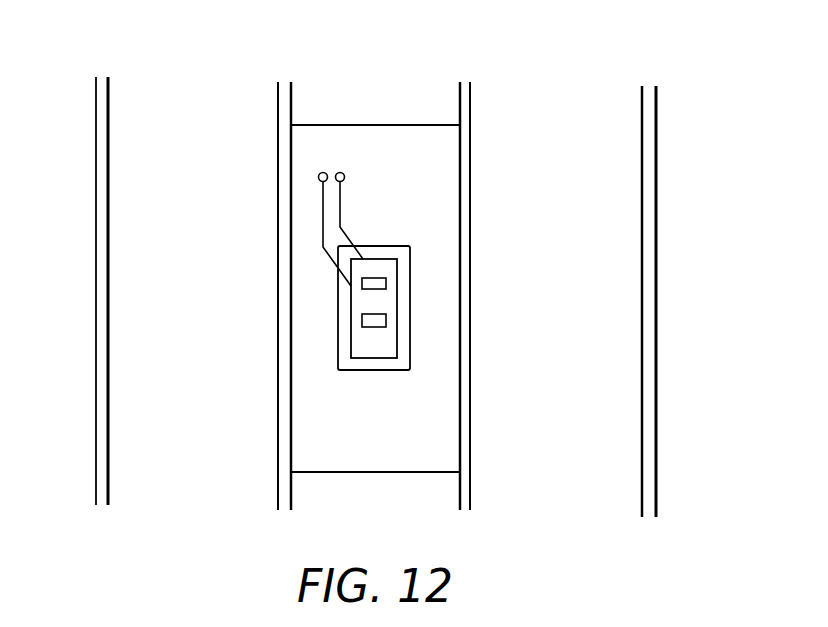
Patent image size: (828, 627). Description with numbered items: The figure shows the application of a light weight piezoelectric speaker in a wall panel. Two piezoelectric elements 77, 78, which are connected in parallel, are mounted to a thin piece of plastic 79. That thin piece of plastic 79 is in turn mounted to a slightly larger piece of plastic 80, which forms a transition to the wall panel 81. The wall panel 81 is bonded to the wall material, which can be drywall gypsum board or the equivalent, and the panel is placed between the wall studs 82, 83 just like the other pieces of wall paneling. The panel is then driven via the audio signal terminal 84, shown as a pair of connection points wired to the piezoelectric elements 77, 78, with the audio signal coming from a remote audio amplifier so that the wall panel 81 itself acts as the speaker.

The piezoelectric element 77 is at (386, 320).
The piezoelectric element 78 is at (386, 283).
The thin piece of plastic 79 is at (368, 358).
The slightly larger piece of plastic 80 is at (394, 246).
The wall panel 81 is at (373, 125).
The wall stud 82 is at (292, 97).
The wall stud 83 is at (459, 92).
The audio signal terminal 84 is at (333, 168).